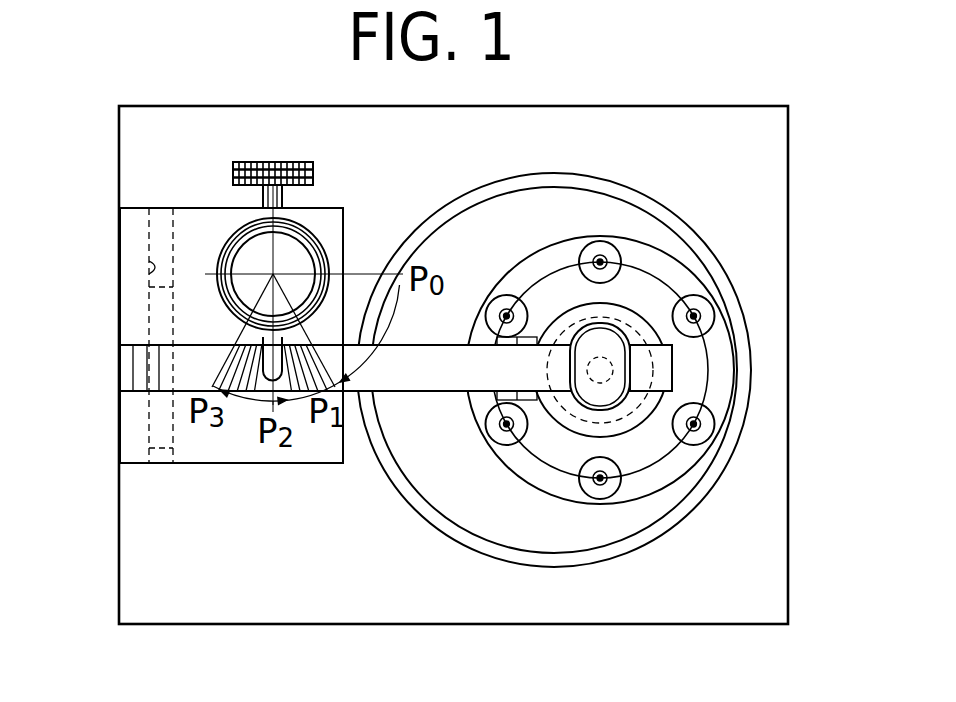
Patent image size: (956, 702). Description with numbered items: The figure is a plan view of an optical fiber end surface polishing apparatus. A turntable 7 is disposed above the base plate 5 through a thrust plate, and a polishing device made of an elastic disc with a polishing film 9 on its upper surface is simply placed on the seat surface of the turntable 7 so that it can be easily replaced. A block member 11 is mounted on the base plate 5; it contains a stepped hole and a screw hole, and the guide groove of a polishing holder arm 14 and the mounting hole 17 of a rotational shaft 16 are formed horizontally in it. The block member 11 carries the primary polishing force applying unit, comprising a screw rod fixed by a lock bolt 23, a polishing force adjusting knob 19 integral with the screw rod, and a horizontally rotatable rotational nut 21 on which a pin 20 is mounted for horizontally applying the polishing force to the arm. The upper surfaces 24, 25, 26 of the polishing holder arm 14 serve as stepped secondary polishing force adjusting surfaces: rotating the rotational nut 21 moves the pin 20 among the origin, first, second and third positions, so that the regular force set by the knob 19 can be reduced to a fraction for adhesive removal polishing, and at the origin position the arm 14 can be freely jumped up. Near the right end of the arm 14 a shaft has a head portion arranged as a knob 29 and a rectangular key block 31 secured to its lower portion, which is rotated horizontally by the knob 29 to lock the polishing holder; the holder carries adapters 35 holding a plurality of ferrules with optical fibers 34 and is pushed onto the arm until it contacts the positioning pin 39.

The base plate 5 is at (757, 594).
The turntable 7 is at (637, 549).
The polishing film 9 is at (557, 208).
The block member 11 is at (133, 233).
The polishing holder arm 14 is at (430, 393).
The rotational shaft 16 is at (160, 428).
The mounting hole 17 is at (150, 275).
The polishing force adjusting knob 19 is at (290, 233).
The pin 20 is at (268, 367).
The rotational nut 21 is at (317, 232).
The lock bolt 23 is at (248, 163).
The upper surface 24 is at (345, 345).
The upper surface 25 is at (258, 385).
The upper surface 26 is at (190, 370).
The knob 29 is at (675, 375).
The key block 31 is at (459, 413).
The ferrules with optical fibers 34 is at (694, 297).
The adapters 35 is at (714, 317).
The positioning pin 39 is at (530, 318).